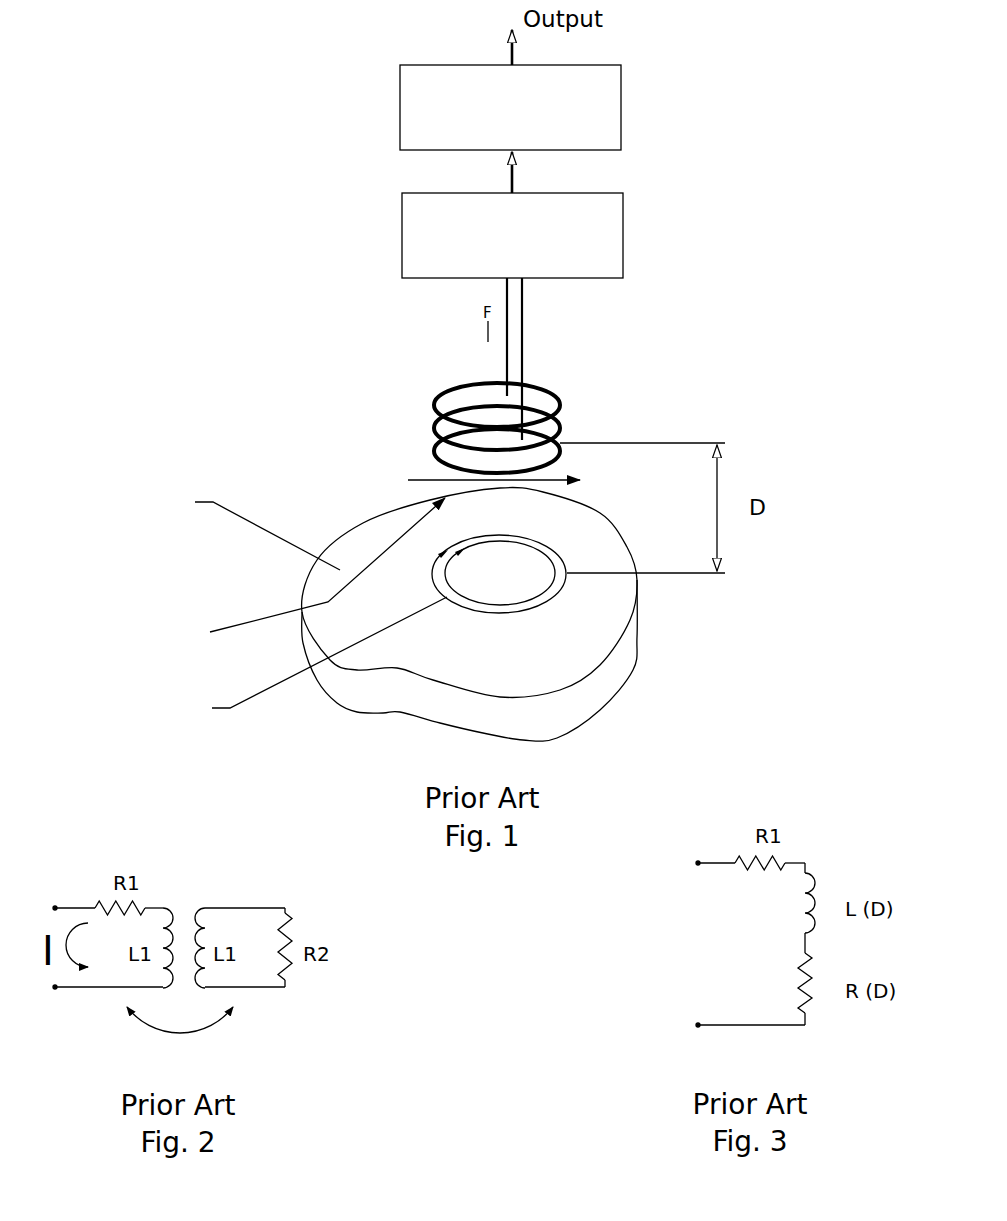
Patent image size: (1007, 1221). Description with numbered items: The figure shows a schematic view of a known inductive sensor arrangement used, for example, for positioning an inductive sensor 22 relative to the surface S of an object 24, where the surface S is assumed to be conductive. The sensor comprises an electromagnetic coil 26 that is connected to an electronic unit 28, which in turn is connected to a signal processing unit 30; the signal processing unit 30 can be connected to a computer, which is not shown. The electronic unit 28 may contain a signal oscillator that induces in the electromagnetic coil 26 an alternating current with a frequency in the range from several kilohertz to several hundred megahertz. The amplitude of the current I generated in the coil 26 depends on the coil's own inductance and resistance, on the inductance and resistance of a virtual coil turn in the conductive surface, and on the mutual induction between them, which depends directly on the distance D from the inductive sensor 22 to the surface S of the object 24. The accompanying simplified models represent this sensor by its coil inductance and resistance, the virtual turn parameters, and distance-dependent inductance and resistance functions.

The inductive sensor 22 is at (592, 375).
The object 24 is at (185, 448).
The electromagnetic coil 26 is at (563, 427).
The electronic unit 28 is at (628, 243).
The signal processing unit 30 is at (628, 103).